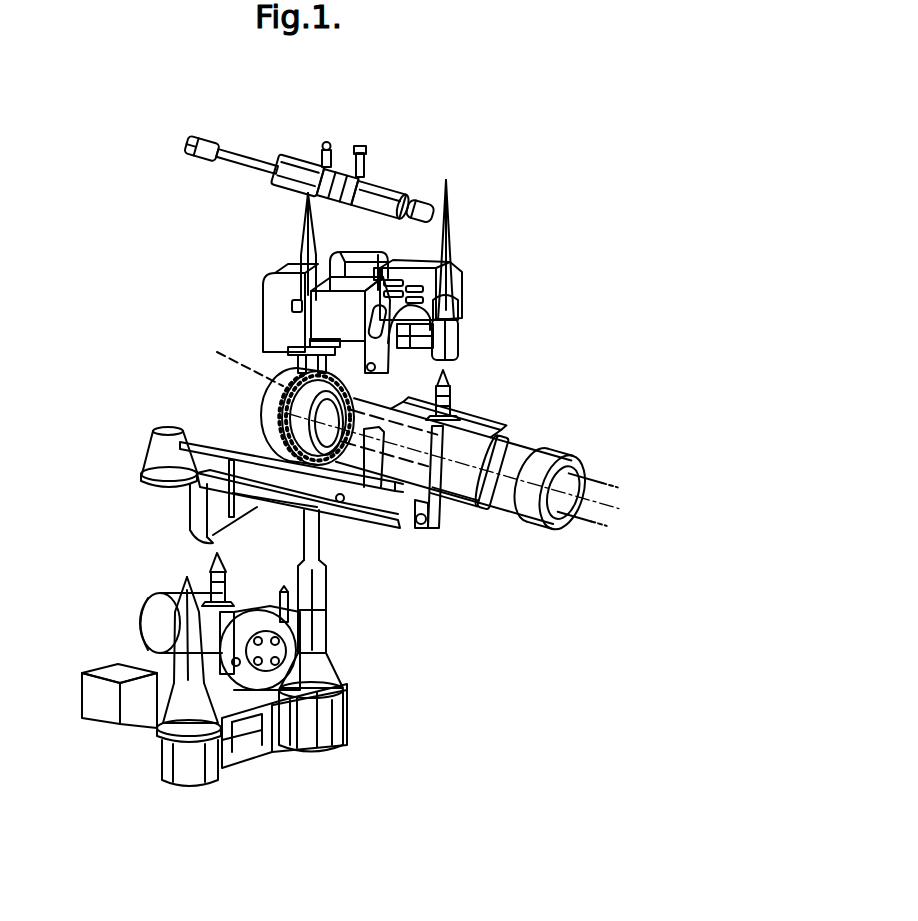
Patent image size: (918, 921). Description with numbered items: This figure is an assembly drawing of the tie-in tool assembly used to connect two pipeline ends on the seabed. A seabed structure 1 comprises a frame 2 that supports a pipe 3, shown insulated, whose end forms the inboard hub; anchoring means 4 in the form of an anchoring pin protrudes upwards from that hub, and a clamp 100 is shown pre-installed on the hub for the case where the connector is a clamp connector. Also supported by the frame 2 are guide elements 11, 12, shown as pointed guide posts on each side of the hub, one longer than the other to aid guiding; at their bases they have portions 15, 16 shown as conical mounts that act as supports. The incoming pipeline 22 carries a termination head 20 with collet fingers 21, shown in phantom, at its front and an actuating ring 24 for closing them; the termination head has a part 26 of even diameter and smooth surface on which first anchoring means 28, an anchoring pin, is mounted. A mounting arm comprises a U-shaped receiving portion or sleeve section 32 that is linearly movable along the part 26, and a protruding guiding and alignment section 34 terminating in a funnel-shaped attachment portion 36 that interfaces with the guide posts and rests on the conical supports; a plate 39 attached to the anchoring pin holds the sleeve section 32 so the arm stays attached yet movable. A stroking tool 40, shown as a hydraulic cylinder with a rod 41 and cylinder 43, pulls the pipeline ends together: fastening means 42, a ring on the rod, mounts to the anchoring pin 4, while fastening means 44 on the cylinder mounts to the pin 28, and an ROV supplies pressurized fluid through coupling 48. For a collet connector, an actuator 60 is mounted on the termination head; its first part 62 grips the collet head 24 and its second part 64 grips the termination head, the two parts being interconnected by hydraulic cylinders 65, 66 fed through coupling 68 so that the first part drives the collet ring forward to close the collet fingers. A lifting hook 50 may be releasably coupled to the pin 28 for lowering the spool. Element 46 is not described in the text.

The seabed structure 1 is at (208, 655).
The frame 2 is at (100, 724).
The pipe 3 is at (143, 612).
The anchoring means 4 is at (213, 554).
The guide element 11 is at (183, 661).
The guide element 12 is at (330, 594).
The support portion 15 is at (177, 718).
The support portion 16 is at (338, 669).
The termination head 20 is at (405, 460).
The collet fingers 21 is at (231, 362).
The pipeline 22 is at (593, 478).
The actuating ring 24 is at (264, 428).
The termination head part 26 is at (475, 503).
The first anchoring means 28 is at (452, 386).
The receiving portion 32 is at (437, 524).
The guiding and alignment section 34 is at (256, 483).
The attachment portion 36 is at (153, 456).
The plate 39 is at (480, 418).
The stroking tool 40 is at (292, 162).
The rod 41 is at (298, 166).
The fastening means 42 is at (208, 140).
The cylinder 43 is at (386, 190).
The fastening means 44 is at (430, 204).
The pin 46 is at (361, 146).
The coupling 48 is at (326, 143).
The lifting hook 50 is at (462, 342).
The actuator 60 is at (338, 288).
The first part 62 is at (268, 306).
The second part 64 is at (462, 290).
The cylinder 65 is at (268, 393).
The cylinder 66 is at (426, 350).
The coupling 68 is at (378, 258).
The clamp 100 is at (300, 626).